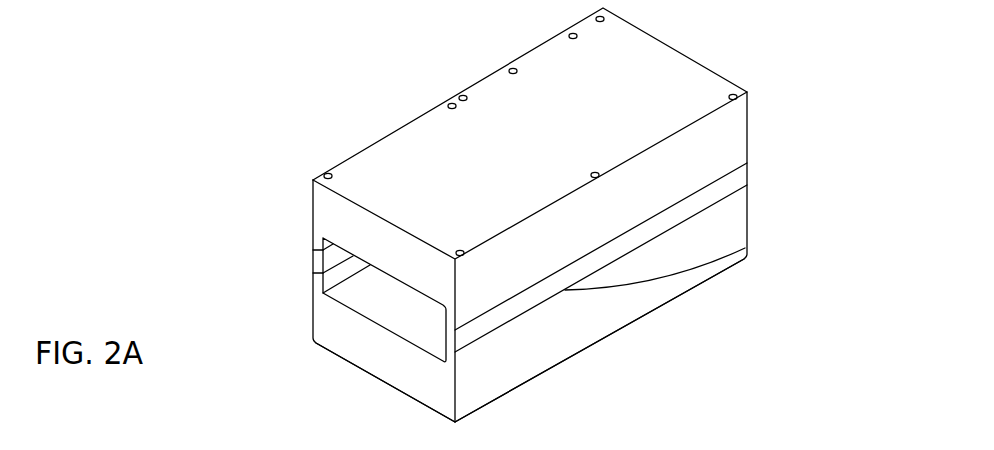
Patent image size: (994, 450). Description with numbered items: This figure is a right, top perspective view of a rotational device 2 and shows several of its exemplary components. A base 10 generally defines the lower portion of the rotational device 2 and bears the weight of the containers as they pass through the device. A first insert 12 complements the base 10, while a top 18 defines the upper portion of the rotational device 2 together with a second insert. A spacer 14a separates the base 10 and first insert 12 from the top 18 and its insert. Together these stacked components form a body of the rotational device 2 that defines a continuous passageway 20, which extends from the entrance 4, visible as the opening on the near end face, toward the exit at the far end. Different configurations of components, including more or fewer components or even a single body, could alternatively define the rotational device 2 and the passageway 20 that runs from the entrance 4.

The rotational device 2 is at (783, 62).
The top 18 is at (400, 155).
The spacer 14a is at (720, 188).
The first insert 12 is at (677, 260).
The base 10 is at (522, 363).
The entrance 4 is at (357, 293).
The passageway 20 is at (402, 320).